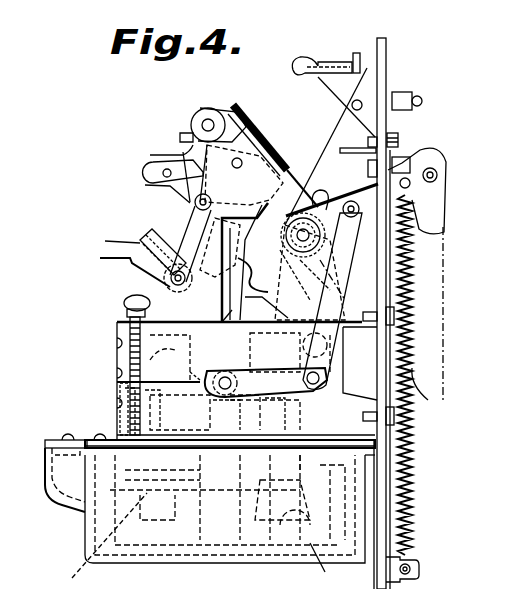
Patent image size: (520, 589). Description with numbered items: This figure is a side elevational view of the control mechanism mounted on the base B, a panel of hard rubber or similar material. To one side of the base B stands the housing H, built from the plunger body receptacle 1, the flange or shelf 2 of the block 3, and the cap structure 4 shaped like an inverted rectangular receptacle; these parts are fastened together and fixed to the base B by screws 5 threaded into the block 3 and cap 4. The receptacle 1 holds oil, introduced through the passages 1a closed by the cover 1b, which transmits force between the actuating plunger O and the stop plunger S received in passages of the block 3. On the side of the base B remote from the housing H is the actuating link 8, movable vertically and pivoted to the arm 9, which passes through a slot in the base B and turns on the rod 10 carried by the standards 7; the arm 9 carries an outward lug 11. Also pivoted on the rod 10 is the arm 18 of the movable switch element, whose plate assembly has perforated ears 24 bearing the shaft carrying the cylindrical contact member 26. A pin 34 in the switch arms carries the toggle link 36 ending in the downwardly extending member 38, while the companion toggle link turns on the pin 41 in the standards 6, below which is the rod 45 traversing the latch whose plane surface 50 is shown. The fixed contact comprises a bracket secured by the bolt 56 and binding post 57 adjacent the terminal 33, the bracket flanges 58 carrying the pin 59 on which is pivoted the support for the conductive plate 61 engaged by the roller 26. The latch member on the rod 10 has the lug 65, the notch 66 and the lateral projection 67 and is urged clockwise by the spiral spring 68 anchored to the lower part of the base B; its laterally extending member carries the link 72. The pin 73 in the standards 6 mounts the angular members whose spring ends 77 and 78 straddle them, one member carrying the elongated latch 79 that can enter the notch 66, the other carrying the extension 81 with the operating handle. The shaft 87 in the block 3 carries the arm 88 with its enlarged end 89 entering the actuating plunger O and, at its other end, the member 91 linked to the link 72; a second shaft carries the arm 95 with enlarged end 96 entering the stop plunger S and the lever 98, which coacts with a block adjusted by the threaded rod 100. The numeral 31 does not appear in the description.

The base B is at (387, 47).
The housing H is at (80, 546).
The stop plunger S is at (98, 541).
The actuating plunger O is at (325, 566).
The plunger body receptacle 1 is at (273, 563).
The passages 1a is at (50, 466).
The cover 1b is at (56, 440).
The flange or shelf 2 is at (92, 437).
The block 3 is at (120, 410).
The cap structure 4 is at (121, 341).
The screws 5 is at (368, 400).
The standards 6 is at (173, 247).
The standards 7 is at (302, 188).
The actuating member or link 8 is at (433, 315).
The arm 9 is at (436, 138).
The rod 10 is at (302, 245).
The lug 11 is at (319, 193).
The arm 18 is at (257, 262).
The perforated ears 24 is at (197, 111).
The cylindrical contact member 26 is at (191, 126).
The lever 31 is at (155, 172).
The terminal 33 is at (403, 160).
The pin 34 is at (260, 140).
The link 36 is at (165, 155).
The downwardly extending member 38 is at (236, 179).
The pin 41 is at (160, 194).
The rod 45 is at (205, 244).
The plane surface 50 is at (245, 263).
The bolt 56 is at (398, 140).
The binding post 57 is at (402, 93).
The lateral flanges 58 is at (358, 118).
The pin 59 is at (352, 106).
The conductive plate 61 is at (293, 68).
The lug 65 is at (247, 275).
The notch 66 is at (310, 272).
The lateral projection 67 is at (410, 262).
The spiral spring 68 is at (427, 394).
The link 72 is at (342, 281).
The pin 73 is at (170, 280).
The spring end 77 is at (128, 262).
The spring end 78 is at (109, 240).
The elongated latch 79 is at (235, 328).
The extension 81 is at (257, 297).
The rod or shaft 87 is at (225, 376).
The arm 88 is at (226, 415).
The enlarged end 89 is at (272, 414).
The member 91 is at (233, 371).
The arm 95 is at (202, 371).
The enlarged end 96 is at (117, 380).
The arm or lever 98 is at (246, 381).
The threaded rod 100 is at (126, 316).